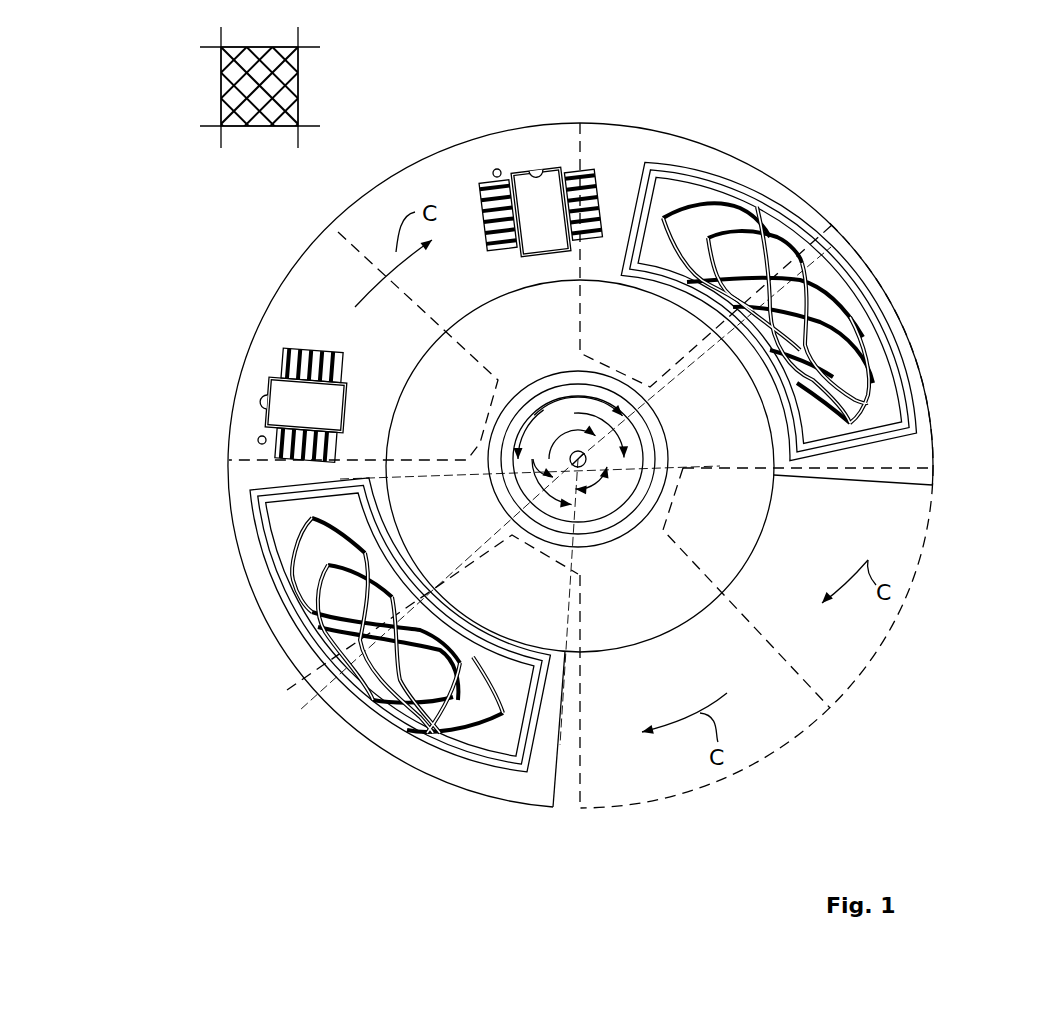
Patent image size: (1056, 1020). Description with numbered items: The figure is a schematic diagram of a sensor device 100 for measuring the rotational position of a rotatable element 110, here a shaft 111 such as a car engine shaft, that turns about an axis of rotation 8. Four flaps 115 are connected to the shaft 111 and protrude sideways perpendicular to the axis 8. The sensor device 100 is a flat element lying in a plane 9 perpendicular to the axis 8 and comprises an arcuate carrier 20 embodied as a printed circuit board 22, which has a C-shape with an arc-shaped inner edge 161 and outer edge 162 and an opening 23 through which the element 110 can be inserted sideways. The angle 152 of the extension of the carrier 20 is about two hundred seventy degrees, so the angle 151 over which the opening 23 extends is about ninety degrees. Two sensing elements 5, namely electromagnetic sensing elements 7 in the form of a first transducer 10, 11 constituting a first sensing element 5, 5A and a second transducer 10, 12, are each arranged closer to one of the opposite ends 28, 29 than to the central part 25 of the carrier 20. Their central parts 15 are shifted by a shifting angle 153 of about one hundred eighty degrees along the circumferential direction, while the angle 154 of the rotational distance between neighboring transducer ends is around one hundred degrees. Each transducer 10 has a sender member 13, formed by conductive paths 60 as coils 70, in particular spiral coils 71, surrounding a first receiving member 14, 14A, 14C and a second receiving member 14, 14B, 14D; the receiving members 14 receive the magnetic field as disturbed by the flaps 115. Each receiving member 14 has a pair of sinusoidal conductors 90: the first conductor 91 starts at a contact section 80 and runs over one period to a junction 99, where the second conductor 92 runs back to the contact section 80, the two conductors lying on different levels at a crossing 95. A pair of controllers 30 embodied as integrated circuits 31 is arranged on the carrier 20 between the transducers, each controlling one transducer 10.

The sensor device 100 is at (160, 78).
The plane 9 is at (300, 87).
The arcuate carrier 20 is at (302, 276).
The printed circuit board 22 is at (360, 215).
The central part 25 is at (325, 225).
The opening 23 is at (797, 611).
The crossing 95 is at (690, 303).
The axis of rotation 8 is at (588, 458).
The angle of extension of the arcuate carrier 152 is at (598, 383).
The shifting angle 153 is at (583, 400).
The angle of the rotational distance 154 is at (552, 412).
The rotatable element 110 is at (588, 513).
The shaft 111 is at (617, 517).
The angle of the opening 151 is at (650, 515).
The flaps 115 is at (420, 470).
The controllers 30 is at (545, 188).
The integrated circuits 31 is at (263, 377).
The electromagnetic transducer 10 is at (599, 478).
The first transducer 11 is at (599, 478).
The second transducer 12 is at (325, 674).
The central parts 15 is at (855, 238).
The receiving members 14 is at (574, 337).
The first receiving member 14A is at (574, 337).
The second receiving member 14B is at (574, 337).
The first receiving member 14C is at (311, 694).
The second receiving member 14D is at (283, 520).
The sender member 13 is at (712, 190).
The contact section 80 is at (663, 215).
The outer edge 162 is at (706, 136).
The inner edge 161 is at (503, 635).
The conductors 90 is at (700, 196).
The first conductor 91 is at (700, 196).
The second conductor 92 is at (765, 236).
The conductive paths 60 is at (847, 232).
The sensing elements 5 is at (587, 540).
The first sensing element 5A is at (935, 350).
The electromagnetic sensing elements 7 is at (950, 397).
The junction 99 is at (913, 410).
The end 28 is at (903, 490).
The end 29 is at (568, 773).
The coils 70 is at (448, 506).
The spiral coils 71 is at (740, 353).